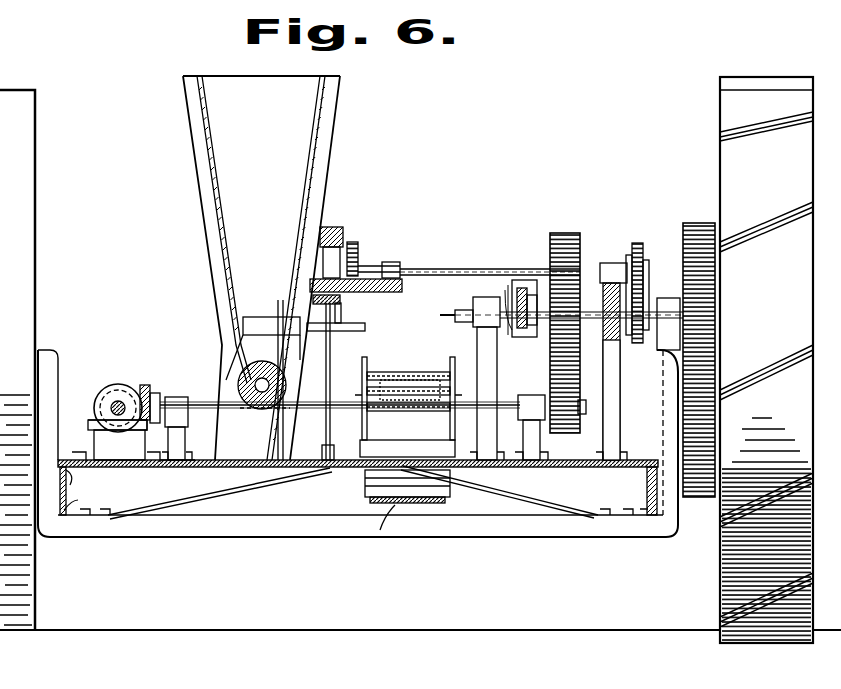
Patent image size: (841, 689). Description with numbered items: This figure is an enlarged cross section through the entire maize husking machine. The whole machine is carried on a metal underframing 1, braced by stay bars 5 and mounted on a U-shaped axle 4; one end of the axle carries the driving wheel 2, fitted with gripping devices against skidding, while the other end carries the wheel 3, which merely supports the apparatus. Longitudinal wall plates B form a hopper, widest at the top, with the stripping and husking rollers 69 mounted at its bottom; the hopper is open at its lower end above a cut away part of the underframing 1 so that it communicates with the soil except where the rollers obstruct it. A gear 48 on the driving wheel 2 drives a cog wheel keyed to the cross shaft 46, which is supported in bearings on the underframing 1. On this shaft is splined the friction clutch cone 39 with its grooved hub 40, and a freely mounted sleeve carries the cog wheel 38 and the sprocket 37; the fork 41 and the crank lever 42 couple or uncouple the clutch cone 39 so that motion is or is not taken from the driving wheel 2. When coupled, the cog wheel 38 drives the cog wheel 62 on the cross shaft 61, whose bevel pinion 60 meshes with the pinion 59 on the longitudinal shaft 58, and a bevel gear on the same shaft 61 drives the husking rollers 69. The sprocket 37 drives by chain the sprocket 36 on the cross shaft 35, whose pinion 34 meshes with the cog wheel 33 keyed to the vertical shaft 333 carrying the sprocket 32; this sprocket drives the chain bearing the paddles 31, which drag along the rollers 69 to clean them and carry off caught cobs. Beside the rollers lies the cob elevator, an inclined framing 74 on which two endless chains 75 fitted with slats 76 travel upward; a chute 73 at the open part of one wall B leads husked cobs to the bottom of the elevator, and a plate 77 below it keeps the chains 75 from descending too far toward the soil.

The underframing 1 is at (132, 468).
The driving wheel 2 is at (766, 360).
The wheel 3 is at (37, 292).
The U-shaped axle 4 is at (282, 535).
The stay bars 5 is at (70, 478).
The paddles 31 is at (263, 380).
The sprocket 32 is at (365, 330).
The cog wheel 33 is at (355, 302).
The vertical shaft 333 is at (325, 333).
The pinion 34 is at (358, 256).
The cross shaft 35 is at (490, 269).
The sprocket 36 is at (644, 250).
The sprocket 37 is at (640, 350).
The cog wheel 38 is at (575, 236).
The friction clutch cone 39 is at (526, 416).
The grooved hub 40 is at (530, 280).
The fork 41 is at (530, 335).
The crank lever 42 is at (455, 318).
The cross shaft 46 is at (473, 316).
The gear 48 is at (716, 292).
The longitudinal shaft 58 is at (112, 402).
The pinion 59 is at (118, 384).
The bevel pinion 60 is at (145, 385).
The cross shaft 61 is at (188, 397).
The cog wheel 62 is at (565, 457).
The husking rollers 69 is at (265, 412).
The chute 73 is at (332, 420).
The framing 74 is at (407, 455).
The endless chains 75 is at (365, 483).
The slats 76 is at (422, 378).
The plate 77 is at (395, 530).
The wall plates B is at (314, 173).